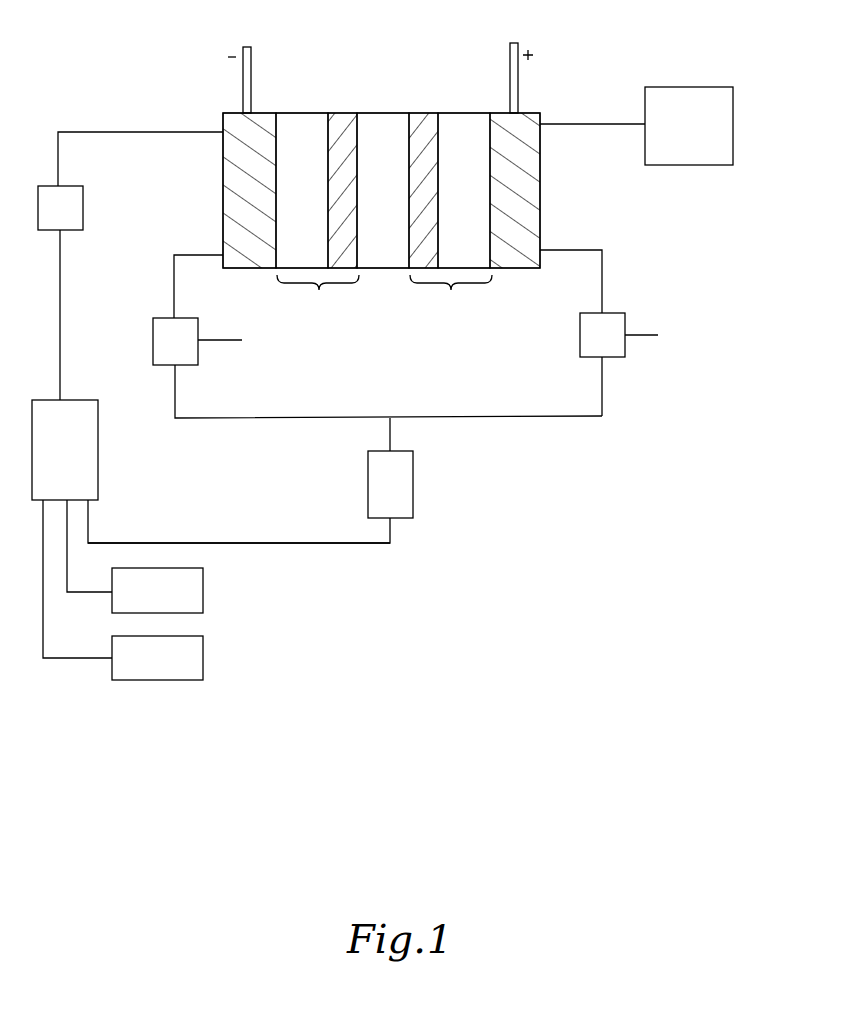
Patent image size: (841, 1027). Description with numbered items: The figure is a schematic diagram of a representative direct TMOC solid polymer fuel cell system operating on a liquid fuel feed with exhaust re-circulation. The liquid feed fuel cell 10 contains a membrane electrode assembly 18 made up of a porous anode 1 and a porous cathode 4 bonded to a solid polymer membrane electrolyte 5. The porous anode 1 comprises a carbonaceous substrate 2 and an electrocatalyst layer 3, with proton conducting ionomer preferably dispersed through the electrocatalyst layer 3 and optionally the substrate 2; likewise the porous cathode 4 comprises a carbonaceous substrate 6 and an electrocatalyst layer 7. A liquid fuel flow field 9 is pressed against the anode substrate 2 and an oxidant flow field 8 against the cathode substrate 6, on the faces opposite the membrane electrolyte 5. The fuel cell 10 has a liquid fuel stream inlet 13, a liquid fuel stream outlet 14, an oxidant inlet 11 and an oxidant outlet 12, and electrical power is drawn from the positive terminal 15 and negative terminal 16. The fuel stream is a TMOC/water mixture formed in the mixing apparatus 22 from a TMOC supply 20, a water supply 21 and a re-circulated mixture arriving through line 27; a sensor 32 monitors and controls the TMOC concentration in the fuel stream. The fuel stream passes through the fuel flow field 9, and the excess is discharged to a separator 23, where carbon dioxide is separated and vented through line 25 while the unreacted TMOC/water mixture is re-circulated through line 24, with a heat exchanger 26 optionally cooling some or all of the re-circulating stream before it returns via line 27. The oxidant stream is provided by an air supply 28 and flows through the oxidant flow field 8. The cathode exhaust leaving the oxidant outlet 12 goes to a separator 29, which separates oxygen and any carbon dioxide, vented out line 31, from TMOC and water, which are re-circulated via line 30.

The porous anode 1 is at (319, 298).
The carbonaceous substrate 2 is at (293, 133).
The electrocatalyst layer 3 is at (343, 135).
The porous cathode 4 is at (451, 298).
The solid polymer membrane electrolyte 5 is at (390, 247).
The carbonaceous substrate 6 is at (465, 140).
The electrocatalyst layer 7 is at (418, 120).
The oxidant flow field 8 is at (513, 248).
The liquid fuel flow field 9 is at (253, 253).
The liquid feed fuel cell 10 is at (548, 57).
The oxidant inlet 11 is at (572, 123).
The oxidant outlet 12 is at (570, 250).
The liquid fuel stream inlet 13 is at (212, 130).
The liquid fuel stream outlet 14 is at (217, 253).
The positive terminal 15 is at (510, 63).
The negative terminal 16 is at (250, 75).
The membrane electrode assembly 18 is at (280, 80).
The TMOC supply 20 is at (172, 658).
The water supply 21 is at (192, 592).
The mixing apparatus 22 is at (73, 447).
The separator 23 is at (163, 323).
The line 24 is at (173, 383).
The line 25 is at (207, 345).
The heat exchanger 26 is at (402, 485).
The re-circulation line 27 is at (355, 540).
The air supply 28 is at (670, 107).
The separator 29 is at (588, 335).
The line 30 is at (603, 377).
The line 31 is at (643, 333).
The sensor 32 is at (70, 203).